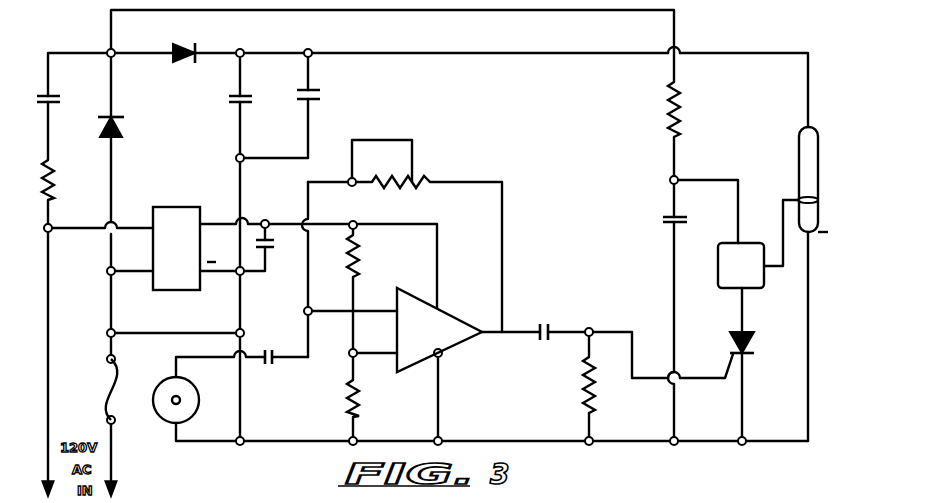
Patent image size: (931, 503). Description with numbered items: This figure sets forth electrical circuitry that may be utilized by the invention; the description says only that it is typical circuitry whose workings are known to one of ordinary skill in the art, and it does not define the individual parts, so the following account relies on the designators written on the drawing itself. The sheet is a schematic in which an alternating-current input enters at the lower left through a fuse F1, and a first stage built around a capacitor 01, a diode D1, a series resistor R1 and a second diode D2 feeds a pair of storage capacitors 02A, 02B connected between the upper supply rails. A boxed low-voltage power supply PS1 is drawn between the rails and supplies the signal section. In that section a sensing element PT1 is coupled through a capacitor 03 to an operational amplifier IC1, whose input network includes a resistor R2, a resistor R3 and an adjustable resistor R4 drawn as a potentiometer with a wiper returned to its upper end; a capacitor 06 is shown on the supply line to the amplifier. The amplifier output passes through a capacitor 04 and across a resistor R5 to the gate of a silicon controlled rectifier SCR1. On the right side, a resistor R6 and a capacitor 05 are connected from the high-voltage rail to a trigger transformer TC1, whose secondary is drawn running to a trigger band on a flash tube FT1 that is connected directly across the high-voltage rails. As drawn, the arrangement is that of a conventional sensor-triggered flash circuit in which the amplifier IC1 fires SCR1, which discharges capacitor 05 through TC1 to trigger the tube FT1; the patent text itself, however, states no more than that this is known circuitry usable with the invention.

The capacitor 10uf 330V 01 is at (58, 107).
The capacitor 10uf 330V 02A is at (257, 100).
The capacitor 10uf 330V 02B is at (325, 102).
The capacitor .1uf 03 is at (269, 375).
The capacitor .01uf 04 is at (547, 353).
The capacitor .1uf 250V 05 is at (694, 211).
The capacitor 10uf 16V 06 is at (279, 259).
The diode 1N4004 D1 is at (139, 126).
The diode 1N4004 D2 is at (178, 73).
The resistor 200 ohm 10W R1 is at (68, 173).
The resistor 4.7K R2 is at (373, 256).
The resistor 4.7K R3 is at (373, 398).
The potentiometer 50K R4 is at (401, 198).
The resistor 1K R5 is at (603, 390).
The resistor 100K R6 is at (693, 109).
The 8.3V DC power supply PS1 is at (184, 257).
The phototransistor / sensor PT1 is at (176, 431).
The fuse 1A F1 is at (97, 389).
The 741 operational amplifier IC1 is at (435, 330).
The flash tube FT1 is at (797, 167).
The 4KV trigger coil TC1 is at (756, 267).
The silicon controlled rectifier SCR1 is at (757, 345).